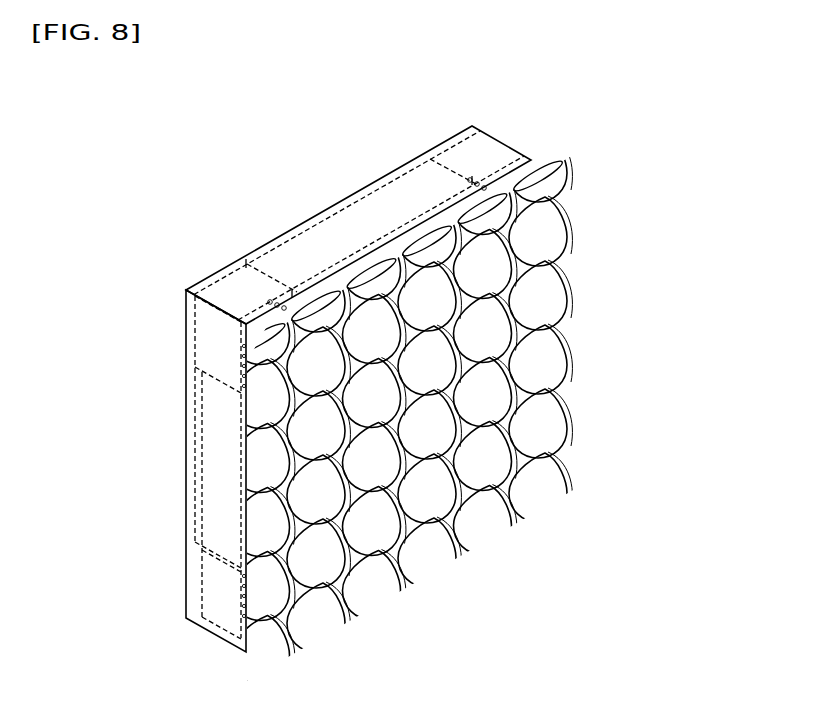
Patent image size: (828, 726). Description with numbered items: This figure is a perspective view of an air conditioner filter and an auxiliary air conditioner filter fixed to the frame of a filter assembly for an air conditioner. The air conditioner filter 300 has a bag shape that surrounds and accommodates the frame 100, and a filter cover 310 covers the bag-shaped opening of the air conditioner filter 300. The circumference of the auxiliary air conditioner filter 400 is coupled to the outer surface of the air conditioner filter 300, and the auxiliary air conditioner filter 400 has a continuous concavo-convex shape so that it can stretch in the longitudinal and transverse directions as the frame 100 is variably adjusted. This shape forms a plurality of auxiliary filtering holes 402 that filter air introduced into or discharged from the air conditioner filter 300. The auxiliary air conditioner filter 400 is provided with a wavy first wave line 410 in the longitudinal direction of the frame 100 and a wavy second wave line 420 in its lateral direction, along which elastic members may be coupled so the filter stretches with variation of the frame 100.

The frame 100 is at (222, 269).
The air conditioner filter 300 is at (172, 384).
The filter cover 310 is at (449, 137).
The auxiliary air conditioner filter 400 is at (486, 119).
The auxiliary filtering holes 402 is at (565, 230).
The first wave line 410 is at (548, 180).
The second wave line 420 is at (256, 431).